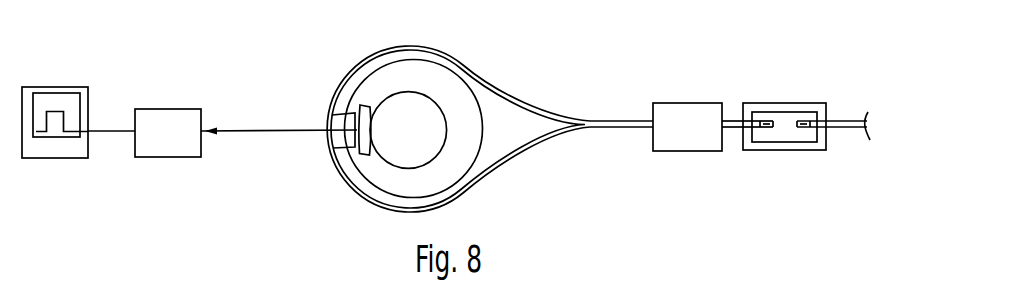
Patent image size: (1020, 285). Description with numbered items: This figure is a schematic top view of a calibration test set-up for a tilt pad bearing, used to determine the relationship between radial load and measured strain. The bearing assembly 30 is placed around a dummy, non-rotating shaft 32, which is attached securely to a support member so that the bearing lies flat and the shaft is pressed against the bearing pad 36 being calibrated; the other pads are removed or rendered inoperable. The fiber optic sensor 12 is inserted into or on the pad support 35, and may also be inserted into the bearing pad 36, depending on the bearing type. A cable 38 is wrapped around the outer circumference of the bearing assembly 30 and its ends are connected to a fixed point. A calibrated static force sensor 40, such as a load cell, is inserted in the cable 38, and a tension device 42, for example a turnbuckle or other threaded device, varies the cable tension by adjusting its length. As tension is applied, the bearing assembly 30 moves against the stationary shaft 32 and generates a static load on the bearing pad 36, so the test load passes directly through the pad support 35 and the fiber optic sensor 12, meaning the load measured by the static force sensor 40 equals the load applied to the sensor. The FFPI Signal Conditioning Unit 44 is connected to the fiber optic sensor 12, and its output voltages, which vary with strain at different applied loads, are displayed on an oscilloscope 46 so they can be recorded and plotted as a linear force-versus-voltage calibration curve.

The fiber optic sensor 12 is at (263, 129).
The bearing assembly 30 is at (503, 124).
The non-rotating shaft 32 is at (408, 96).
The pad support 35 is at (342, 120).
The bearing pad 36 is at (364, 106).
The cable 38 is at (517, 152).
The static force sensor 40 is at (690, 151).
The tension device 42 is at (784, 113).
The FFPI Signal Conditioning Unit 44 is at (174, 157).
The oscilloscope 46 is at (60, 158).